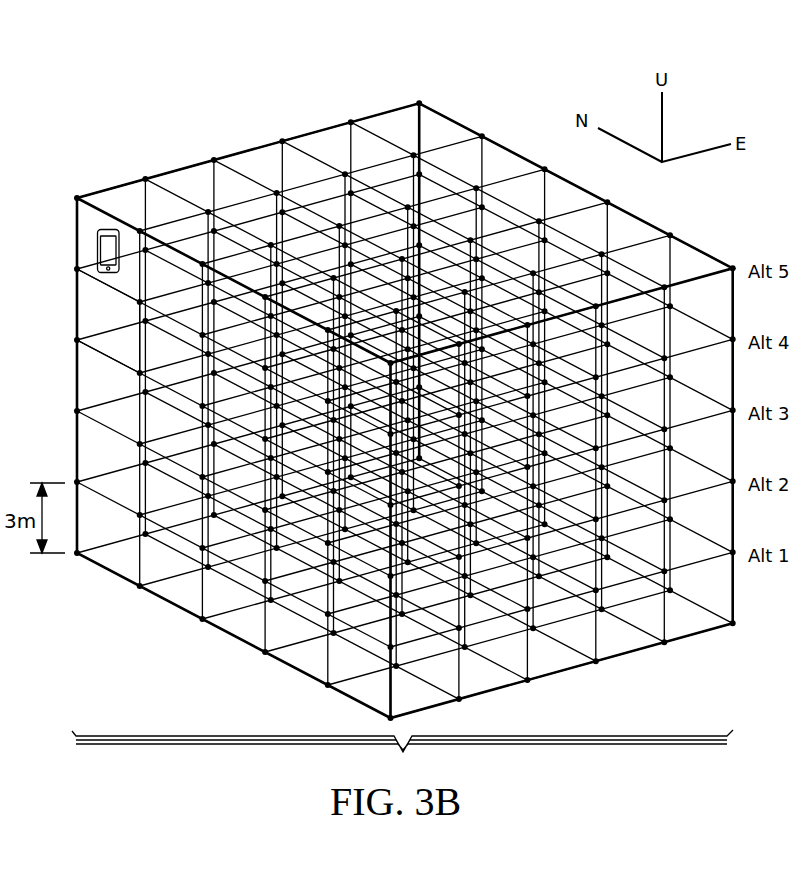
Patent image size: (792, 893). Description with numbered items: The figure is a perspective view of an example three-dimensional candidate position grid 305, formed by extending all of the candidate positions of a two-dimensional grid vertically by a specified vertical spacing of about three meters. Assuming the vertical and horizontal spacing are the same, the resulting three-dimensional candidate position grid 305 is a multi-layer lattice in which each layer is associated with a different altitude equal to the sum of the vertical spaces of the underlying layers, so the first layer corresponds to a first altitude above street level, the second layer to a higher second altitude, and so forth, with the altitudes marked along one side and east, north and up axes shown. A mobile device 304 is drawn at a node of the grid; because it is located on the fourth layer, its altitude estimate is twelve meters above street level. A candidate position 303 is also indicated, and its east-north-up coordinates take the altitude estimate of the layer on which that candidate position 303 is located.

The candidate position 303 is at (126, 288).
The mobile device 304 is at (97, 250).
The 3D candidate position grid 305 is at (240, 129).